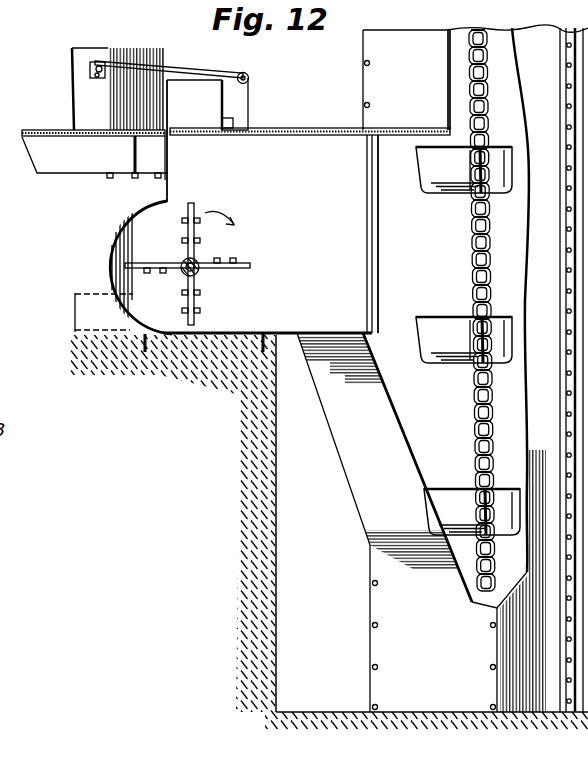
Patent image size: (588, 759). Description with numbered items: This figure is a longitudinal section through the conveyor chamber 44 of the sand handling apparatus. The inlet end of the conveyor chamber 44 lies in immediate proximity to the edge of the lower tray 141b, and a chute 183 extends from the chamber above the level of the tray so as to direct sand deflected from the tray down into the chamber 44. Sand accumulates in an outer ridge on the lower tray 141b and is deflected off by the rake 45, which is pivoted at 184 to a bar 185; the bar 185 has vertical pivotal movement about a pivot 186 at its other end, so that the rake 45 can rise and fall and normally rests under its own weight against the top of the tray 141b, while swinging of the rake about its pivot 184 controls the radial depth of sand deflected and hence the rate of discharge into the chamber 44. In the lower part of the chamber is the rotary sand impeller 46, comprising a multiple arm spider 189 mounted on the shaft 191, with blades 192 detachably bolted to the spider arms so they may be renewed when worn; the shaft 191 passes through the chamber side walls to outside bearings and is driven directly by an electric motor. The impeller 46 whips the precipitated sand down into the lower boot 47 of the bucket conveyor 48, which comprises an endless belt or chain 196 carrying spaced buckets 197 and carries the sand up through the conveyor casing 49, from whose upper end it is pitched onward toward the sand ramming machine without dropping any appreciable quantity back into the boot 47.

The conveyor chamber 44 is at (287, 160).
The rake 45 is at (68, 64).
The rotary sand impeller 46 is at (246, 260).
The lower boot 47 is at (367, 32).
The bucket conveyor 48 is at (461, 196).
The conveyor casing 49 is at (14, 407).
The lower tray 141b is at (42, 118).
The chute 183 is at (236, 111).
The pivot 184 is at (98, 60).
The bar 185 is at (142, 77).
The pivot 186 is at (250, 80).
The multiple arm spider 189 is at (198, 262).
The shaft 191 is at (197, 274).
The blades 192 is at (173, 213).
The endless belt or chain 196 is at (474, 250).
The buckets 197 is at (471, 182).